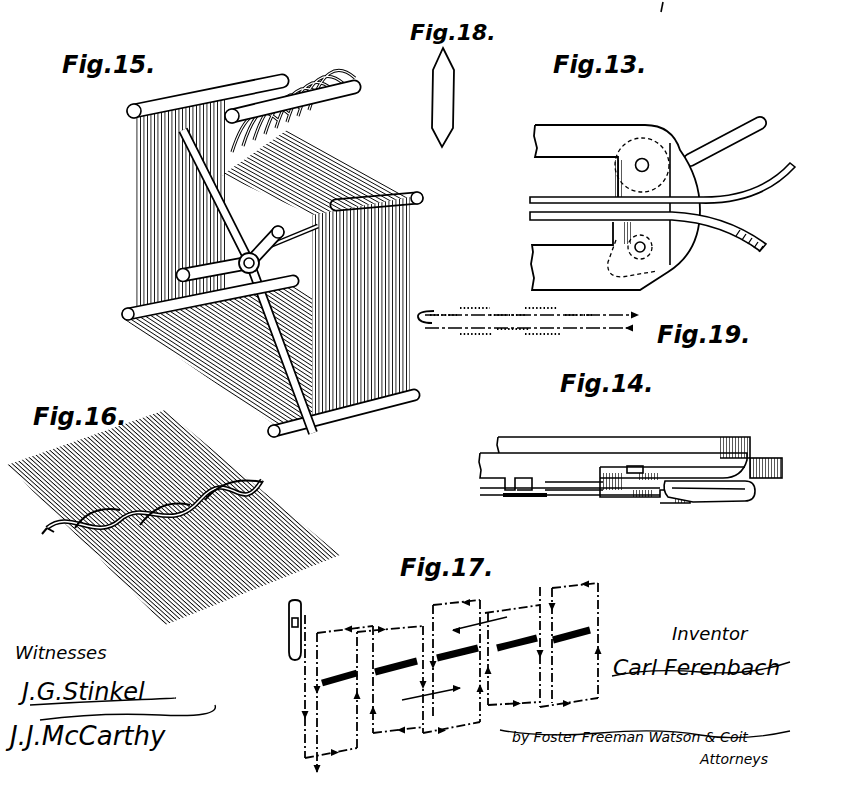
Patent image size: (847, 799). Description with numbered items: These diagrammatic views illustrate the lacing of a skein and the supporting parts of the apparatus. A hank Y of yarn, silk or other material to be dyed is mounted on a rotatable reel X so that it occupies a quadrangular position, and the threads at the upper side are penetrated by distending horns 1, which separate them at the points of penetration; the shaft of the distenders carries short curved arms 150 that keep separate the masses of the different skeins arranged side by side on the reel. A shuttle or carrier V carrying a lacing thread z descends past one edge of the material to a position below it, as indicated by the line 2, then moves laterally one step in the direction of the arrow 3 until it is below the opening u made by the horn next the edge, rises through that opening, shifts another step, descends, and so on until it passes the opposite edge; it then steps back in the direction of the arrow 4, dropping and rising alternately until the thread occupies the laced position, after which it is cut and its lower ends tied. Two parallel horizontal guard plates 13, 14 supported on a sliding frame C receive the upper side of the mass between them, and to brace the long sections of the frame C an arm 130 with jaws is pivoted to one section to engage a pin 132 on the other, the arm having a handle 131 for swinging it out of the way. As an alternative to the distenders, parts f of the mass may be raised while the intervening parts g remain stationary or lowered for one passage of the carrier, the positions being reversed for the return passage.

In FIG. 15, the distending horns 1 is at (310, 133).
In FIG. 15, the short curved arms 150 is at (330, 140).
In FIG. 15, the opening u is at (222, 143).
In FIG. 16, the opening u is at (102, 547).
In FIG. 17, the opening u is at (357, 672).
In FIG. 15, the hank Y is at (140, 210).
In FIG. 19, the hank Y is at (430, 325).
In FIG. 16, the hank Y is at (293, 527).
In FIG. 17, the hank Y is at (486, 658).
In FIG. 15, the rotatable reel X is at (220, 281).
In FIG. 13, the frame C is at (535, 143).
In FIG. 14, the frame C is at (580, 492).
In FIG. 13, the handle 131 is at (762, 107).
In FIG. 13, the arm 130 is at (692, 185).
In FIG. 13, the guard plate 14 is at (530, 197).
In FIG. 14, the guard plate 14 is at (767, 457).
In FIG. 13, the guard plate 13 is at (532, 216).
In FIG. 14, the guard plate 13 is at (705, 439).
In FIG. 13, the pin 132 is at (642, 252).
In FIG. 19, the raised parts of the mass f is at (437, 310).
In FIG. 19, the intervening parts of the mass g is at (476, 308).
In FIG. 16, the line 2 is at (60, 543).
In FIG. 17, the line 2 is at (321, 703).
In FIG. 17, the shuttle or carrier V is at (284, 630).
In FIG. 17, the lacing thread z is at (315, 680).
In FIG. 17, the arrow 3 is at (431, 699).
In FIG. 17, the arrow 4 is at (479, 622).